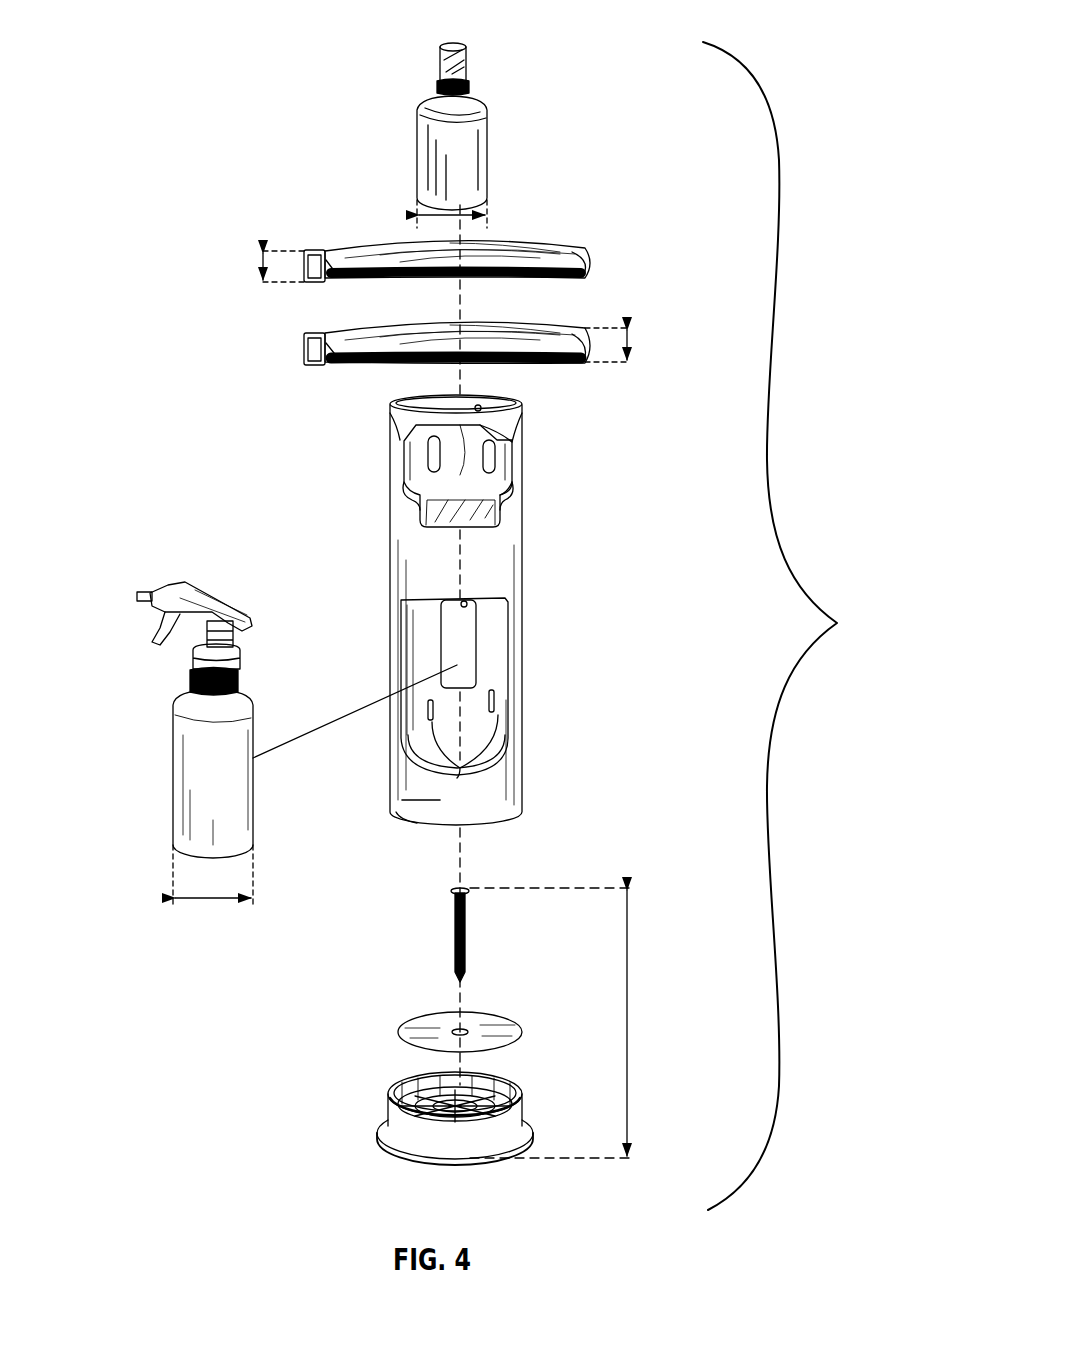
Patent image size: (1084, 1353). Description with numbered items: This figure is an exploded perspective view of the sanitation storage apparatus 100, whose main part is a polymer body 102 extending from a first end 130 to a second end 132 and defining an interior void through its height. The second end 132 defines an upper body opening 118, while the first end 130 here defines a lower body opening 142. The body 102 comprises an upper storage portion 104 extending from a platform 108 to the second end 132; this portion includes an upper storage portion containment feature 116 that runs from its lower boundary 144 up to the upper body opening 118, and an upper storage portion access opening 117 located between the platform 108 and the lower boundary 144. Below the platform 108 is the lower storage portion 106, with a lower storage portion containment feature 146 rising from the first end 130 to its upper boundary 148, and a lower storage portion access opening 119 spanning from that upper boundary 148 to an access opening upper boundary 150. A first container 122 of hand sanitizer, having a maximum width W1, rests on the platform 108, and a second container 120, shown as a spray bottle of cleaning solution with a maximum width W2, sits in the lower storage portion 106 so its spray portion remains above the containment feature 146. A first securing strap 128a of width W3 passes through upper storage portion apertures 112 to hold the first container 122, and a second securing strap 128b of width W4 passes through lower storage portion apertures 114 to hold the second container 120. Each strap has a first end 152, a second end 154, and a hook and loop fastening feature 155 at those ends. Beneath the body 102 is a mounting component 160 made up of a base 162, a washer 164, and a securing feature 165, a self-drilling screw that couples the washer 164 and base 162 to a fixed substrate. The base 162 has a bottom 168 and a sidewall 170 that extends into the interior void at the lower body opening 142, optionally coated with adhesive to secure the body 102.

The sanitation storage apparatus 100 is at (794, 626).
The body 102 is at (517, 533).
The upper storage portion 104 is at (400, 465).
The lower storage portion 106 is at (490, 650).
The platform 108 is at (452, 522).
The upper storage portion apertures 112 is at (432, 460).
The lower storage portion apertures 114 is at (465, 770).
The upper storage portion containment feature 116 is at (520, 410).
The upper storage portion access opening 117 is at (498, 498).
The upper body opening 118 is at (492, 403).
The lower storage portion access opening 119 is at (420, 650).
The second container 120 is at (185, 838).
The first container 122 is at (462, 96).
The first securing strap 128a is at (565, 250).
The second securing strap 128b is at (555, 332).
The first end 130 is at (417, 822).
The second end 132 is at (422, 395).
The lower body opening 142 is at (490, 826).
The lower boundary 144 is at (412, 493).
The lower storage portion containment feature 146 is at (420, 790).
The lower storage containment feature upper boundary 148 is at (508, 755).
The access opening upper boundary 150 is at (465, 598).
The first end 152 is at (320, 250).
The second end 154 is at (355, 282).
The strap fastening feature 155 is at (573, 284).
The mounting component 160 is at (628, 1028).
The base 162 is at (412, 1083).
The washer 164 is at (500, 1028).
The securing feature 165 is at (470, 932).
The bottom 168 is at (470, 1130).
The sidewall 170 is at (412, 1128).
The first container maximum width W1 is at (470, 218).
The second container maximum width W2 is at (213, 900).
The first securing strap width W3 is at (260, 266).
The second securing strap width W4 is at (632, 348).